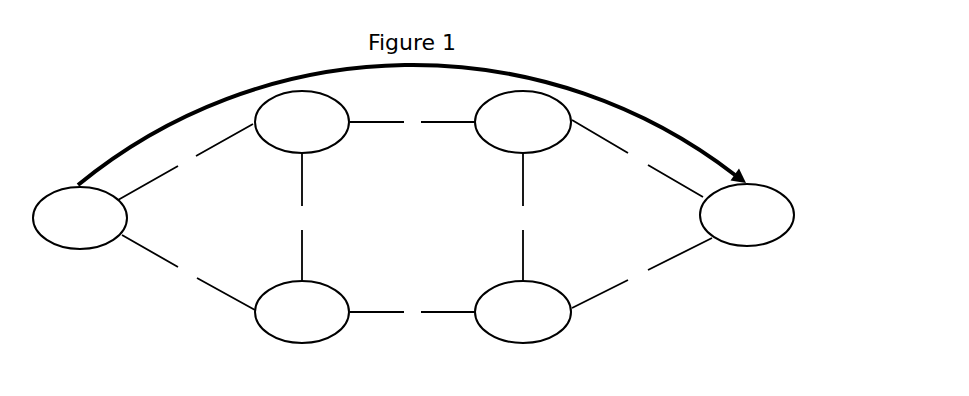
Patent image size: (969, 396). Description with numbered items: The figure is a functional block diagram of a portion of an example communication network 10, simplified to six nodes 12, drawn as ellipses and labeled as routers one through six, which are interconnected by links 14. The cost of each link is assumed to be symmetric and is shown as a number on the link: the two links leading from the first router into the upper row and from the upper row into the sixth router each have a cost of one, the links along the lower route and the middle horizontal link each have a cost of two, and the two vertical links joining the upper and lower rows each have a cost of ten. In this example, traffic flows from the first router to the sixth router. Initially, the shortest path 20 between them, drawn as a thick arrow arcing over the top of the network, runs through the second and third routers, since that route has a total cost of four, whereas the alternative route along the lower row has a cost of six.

The network 10 is at (640, 69).
The nodes 12 is at (65, 250).
The links 14 is at (150, 188).
The shortest path 20 is at (668, 130).